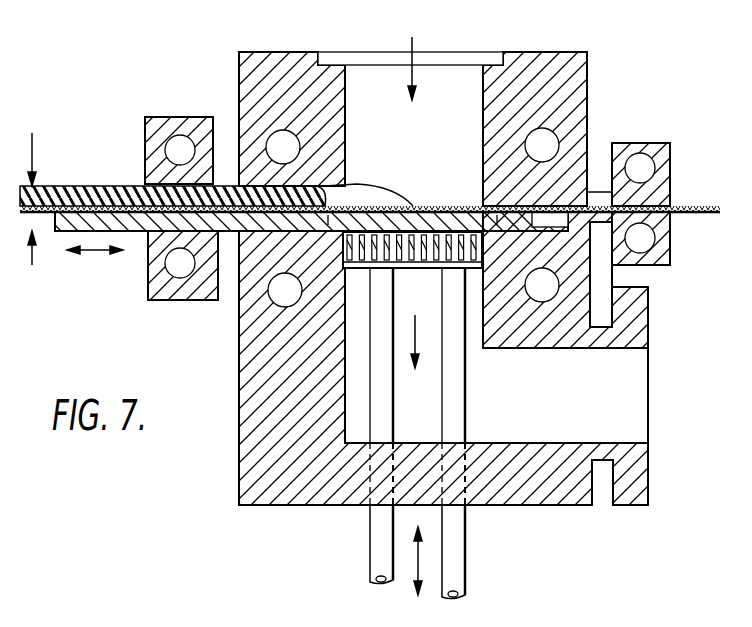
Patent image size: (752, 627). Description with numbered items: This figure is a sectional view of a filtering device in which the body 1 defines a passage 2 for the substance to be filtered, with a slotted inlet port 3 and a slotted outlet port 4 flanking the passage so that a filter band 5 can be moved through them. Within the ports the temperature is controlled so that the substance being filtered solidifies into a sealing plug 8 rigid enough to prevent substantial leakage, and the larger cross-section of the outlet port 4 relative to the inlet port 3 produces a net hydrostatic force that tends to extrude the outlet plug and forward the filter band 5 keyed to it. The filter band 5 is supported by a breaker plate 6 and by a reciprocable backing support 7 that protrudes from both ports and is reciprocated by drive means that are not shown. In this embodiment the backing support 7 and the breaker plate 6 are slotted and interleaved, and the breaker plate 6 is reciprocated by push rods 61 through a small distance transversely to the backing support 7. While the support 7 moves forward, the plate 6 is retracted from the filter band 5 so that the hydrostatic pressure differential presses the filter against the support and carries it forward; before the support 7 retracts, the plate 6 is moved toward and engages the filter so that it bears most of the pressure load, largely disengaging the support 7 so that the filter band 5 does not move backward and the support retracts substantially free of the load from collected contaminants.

The body 1 is at (542, 58).
The passage 2 is at (365, 68).
The inlet port 3 is at (660, 255).
The outlet port 4 is at (155, 132).
The filter band 5 is at (700, 205).
The breaker plate 6 is at (413, 269).
The backing support 7 is at (135, 232).
The sealing plug 8 is at (83, 188).
The push rods 61 is at (458, 567).